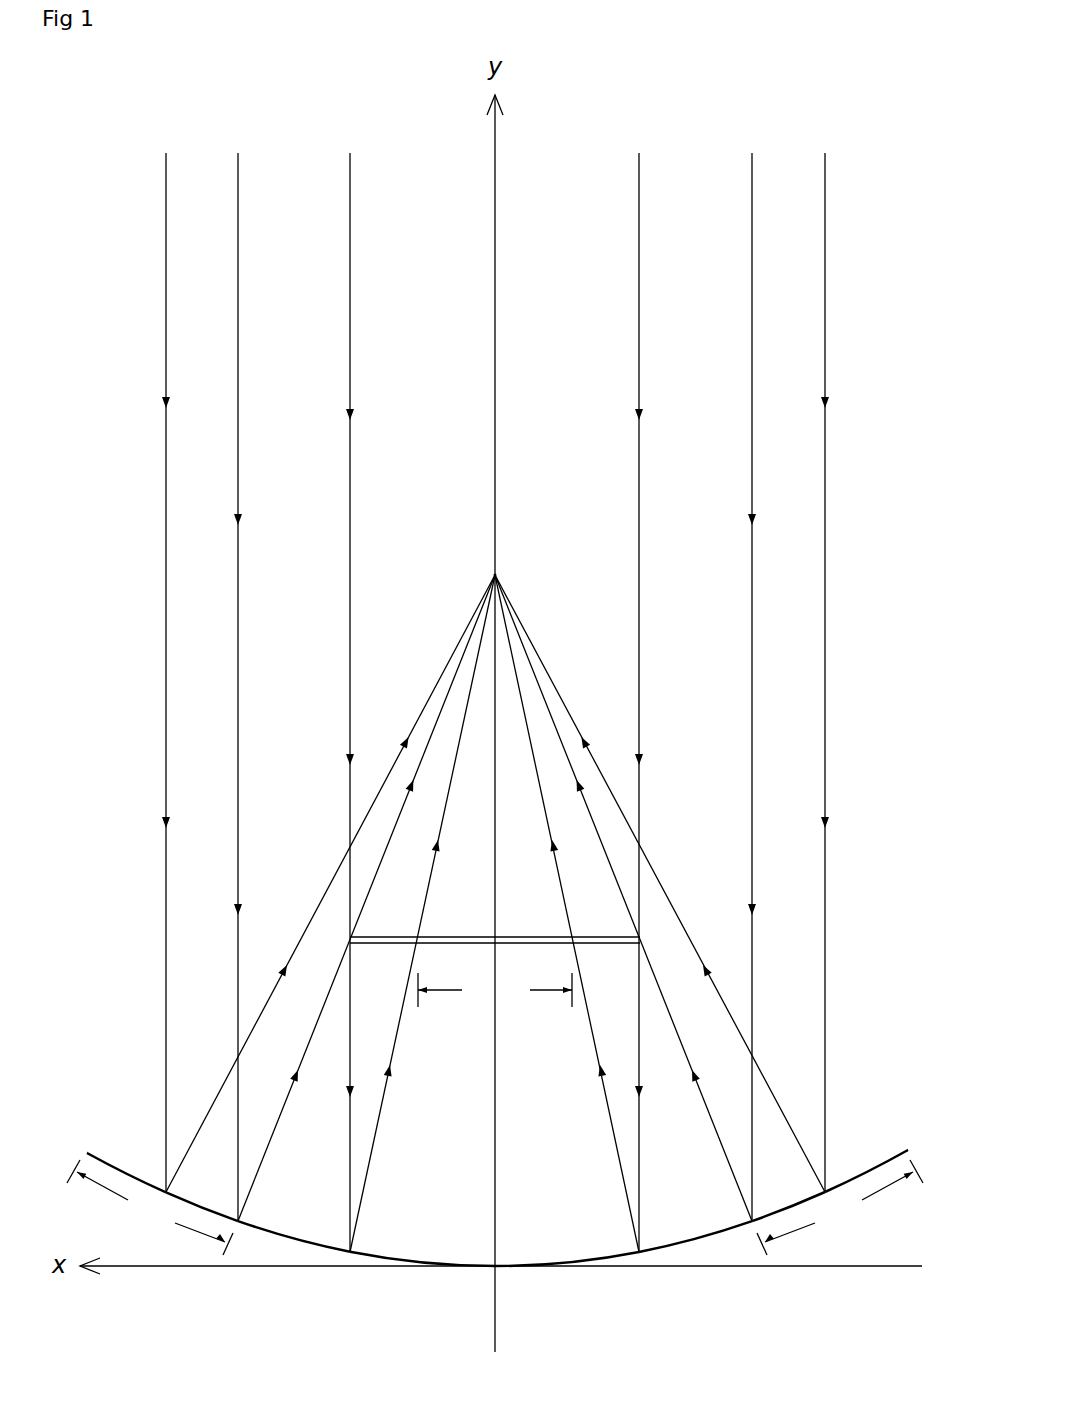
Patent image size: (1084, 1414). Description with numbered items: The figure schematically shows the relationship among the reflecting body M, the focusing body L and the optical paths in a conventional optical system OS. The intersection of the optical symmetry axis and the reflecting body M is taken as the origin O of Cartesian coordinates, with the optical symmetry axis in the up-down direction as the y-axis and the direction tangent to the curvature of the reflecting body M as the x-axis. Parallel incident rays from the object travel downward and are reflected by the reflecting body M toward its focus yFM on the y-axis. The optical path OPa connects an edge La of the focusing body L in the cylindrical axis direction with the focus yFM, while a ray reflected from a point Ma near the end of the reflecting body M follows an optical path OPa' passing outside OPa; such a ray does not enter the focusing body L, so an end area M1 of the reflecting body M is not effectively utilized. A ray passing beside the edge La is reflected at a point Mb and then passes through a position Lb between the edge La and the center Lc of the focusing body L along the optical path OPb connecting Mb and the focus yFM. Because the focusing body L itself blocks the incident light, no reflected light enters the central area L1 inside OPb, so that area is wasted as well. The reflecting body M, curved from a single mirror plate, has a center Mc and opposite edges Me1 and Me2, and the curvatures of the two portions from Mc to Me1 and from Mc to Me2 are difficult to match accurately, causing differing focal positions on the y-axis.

The optical system OS is at (847, 527).
The focus of the reflecting body yFM is at (457, 578).
The center of the focusing body Lc is at (495, 937).
The edge of the focusing body La is at (350, 940).
The position on the focusing body Lb is at (420, 943).
The focusing body L is at (393, 937).
The area of the focusing body not effectively utilized L1 is at (495, 990).
The optical path passing outside optical path OPa OPa' is at (501, 1060).
The optical path connecting edge La and focus yFM OPa is at (493, 1178).
The optical path connecting point Mb and focus yFM OPb is at (375, 1130).
The one edge of the reflecting body Me1 is at (140, 1120).
The other edge of the reflecting body Me2 is at (908, 1150).
The area of the reflecting body not effectively utilized M1 is at (495, 1207).
The reflection point on the reflecting body Ma is at (240, 1227).
The reflection point of ray passing beside edge La Mb is at (348, 1253).
The center of the reflecting body Mc is at (492, 1268).
The reflecting body M is at (607, 1258).
The origin O is at (510, 1282).